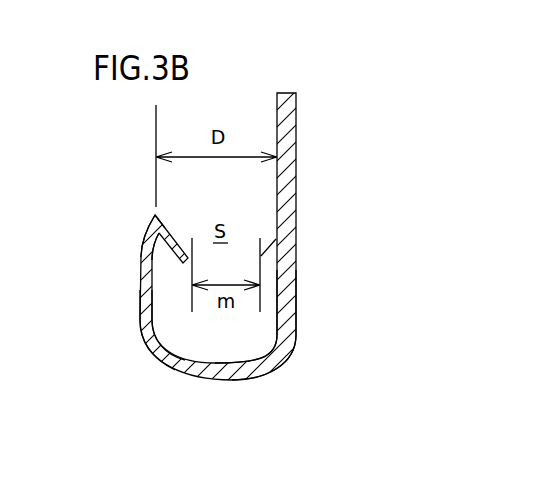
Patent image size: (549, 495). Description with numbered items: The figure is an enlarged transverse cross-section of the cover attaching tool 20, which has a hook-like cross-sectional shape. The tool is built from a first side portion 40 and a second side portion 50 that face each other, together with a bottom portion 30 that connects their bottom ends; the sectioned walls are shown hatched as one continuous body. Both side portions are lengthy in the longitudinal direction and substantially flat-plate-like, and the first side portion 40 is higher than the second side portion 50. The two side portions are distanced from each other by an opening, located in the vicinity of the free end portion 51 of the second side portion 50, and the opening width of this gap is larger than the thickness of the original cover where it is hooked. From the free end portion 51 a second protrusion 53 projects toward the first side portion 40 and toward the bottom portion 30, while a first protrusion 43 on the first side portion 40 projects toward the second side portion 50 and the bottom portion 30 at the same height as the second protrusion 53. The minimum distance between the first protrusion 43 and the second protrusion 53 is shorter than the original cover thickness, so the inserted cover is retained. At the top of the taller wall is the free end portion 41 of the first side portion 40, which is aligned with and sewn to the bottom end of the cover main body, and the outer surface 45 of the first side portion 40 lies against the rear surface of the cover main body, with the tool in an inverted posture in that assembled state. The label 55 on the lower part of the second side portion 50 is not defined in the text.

The cover attaching tool 20 is at (274, 252).
The bottom portion 30 is at (228, 380).
The first side portion 40 is at (287, 233).
The free end portion of the first side portion 41 is at (277, 118).
The first protrusion 43 is at (261, 241).
The outer surface of the first side portion 45 is at (296, 288).
The second side portion 50 is at (143, 277).
The free end portion of the second side portion 51 is at (152, 223).
The second protrusion 53 is at (188, 231).
The lower portion of second side wall 55 is at (141, 308).